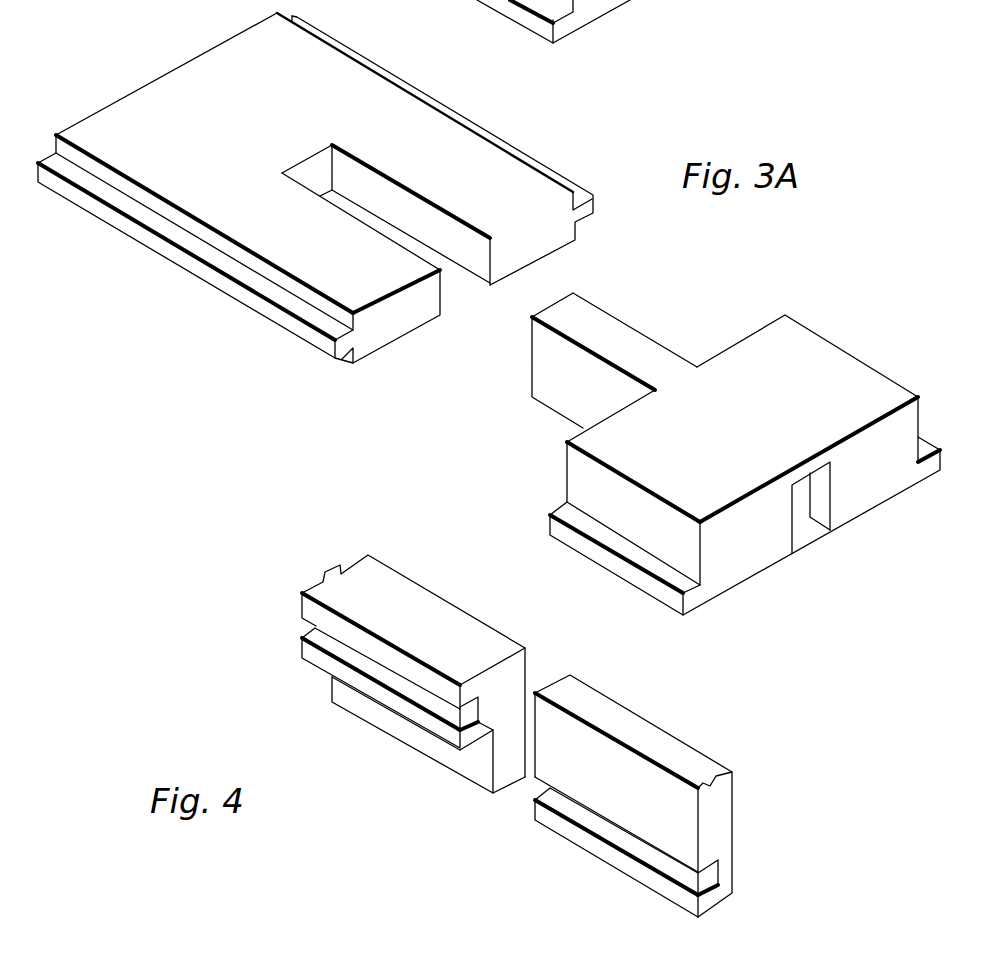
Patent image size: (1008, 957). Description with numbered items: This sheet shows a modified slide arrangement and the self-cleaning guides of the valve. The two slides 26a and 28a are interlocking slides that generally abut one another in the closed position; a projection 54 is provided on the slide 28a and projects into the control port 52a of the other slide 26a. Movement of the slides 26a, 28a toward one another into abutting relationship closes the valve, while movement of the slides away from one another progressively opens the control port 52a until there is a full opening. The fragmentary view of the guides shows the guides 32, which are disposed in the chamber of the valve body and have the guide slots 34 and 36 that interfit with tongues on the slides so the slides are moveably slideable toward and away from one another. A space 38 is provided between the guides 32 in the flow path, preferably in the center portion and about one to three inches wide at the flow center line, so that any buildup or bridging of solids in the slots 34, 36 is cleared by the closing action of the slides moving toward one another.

In FIG. 3A, the slide 26a is at (214, 123).
In FIG. 3A, the control port 52a is at (410, 215).
In FIG. 3A, the slide 28a is at (780, 424).
In FIG. 3A, the projection 54 is at (623, 335).
In FIG. 4, the guide 32 is at (410, 588).
In FIG. 4, the guide slot 34 is at (345, 648).
In FIG. 4, the guide slot 36 is at (662, 862).
In FIG. 4, the space 38 is at (553, 665).